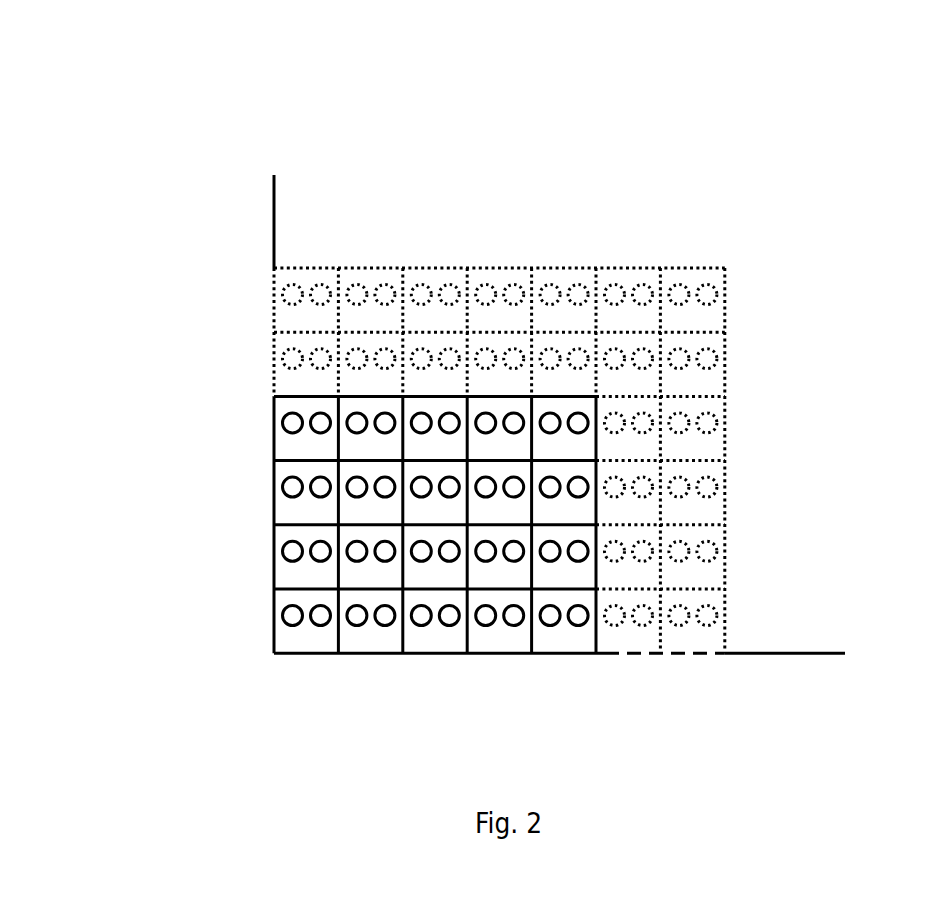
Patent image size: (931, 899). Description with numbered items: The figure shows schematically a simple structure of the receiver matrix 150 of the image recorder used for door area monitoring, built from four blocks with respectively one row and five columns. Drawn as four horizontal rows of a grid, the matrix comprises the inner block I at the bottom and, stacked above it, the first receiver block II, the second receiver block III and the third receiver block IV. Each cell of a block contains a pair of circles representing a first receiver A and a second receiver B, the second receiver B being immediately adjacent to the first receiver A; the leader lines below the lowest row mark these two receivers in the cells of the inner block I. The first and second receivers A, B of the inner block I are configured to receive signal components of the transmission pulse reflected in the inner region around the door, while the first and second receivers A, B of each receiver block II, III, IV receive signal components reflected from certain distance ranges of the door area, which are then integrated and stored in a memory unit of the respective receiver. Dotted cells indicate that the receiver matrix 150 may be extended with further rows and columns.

The receiver matrix 150 is at (435, 368).
The inner block I is at (374, 671).
The first receiver block II is at (372, 560).
The second receiver block III is at (371, 492).
The third receiver block IV is at (371, 431).
The first receiver A is at (292, 626).
The second receiver B is at (320, 626).